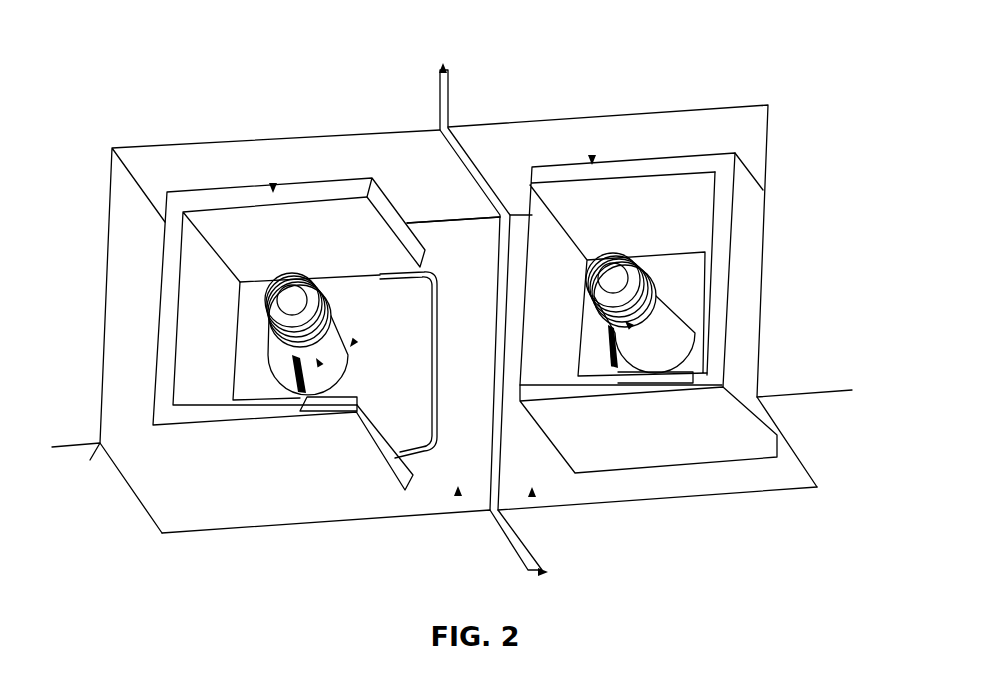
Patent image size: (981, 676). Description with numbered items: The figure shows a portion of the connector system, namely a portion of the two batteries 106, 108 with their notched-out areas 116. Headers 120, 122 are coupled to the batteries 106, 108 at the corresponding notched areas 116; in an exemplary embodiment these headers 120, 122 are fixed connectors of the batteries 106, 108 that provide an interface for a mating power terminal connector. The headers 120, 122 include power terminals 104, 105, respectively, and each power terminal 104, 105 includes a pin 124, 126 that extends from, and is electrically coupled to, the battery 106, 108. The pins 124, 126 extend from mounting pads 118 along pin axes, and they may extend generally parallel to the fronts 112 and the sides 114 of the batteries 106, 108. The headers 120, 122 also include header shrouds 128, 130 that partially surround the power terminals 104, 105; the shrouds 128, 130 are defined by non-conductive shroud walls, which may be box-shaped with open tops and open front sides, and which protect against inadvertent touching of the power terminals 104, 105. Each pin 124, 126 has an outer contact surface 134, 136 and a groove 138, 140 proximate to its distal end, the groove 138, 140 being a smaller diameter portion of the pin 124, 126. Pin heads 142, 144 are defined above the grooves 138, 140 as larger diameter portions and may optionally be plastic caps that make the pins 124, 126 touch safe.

The power terminal 104 is at (362, 362).
The power terminal 105 is at (680, 350).
The battery 106 is at (98, 454).
The battery 108 is at (820, 407).
The front 112 is at (263, 565).
The side 114 is at (434, 130).
The notched-out area 116 is at (458, 490).
The mounting pad 118 is at (207, 515).
The header 120 is at (273, 186).
The header 122 is at (592, 158).
The pin 124 is at (352, 344).
The pin 126 is at (664, 328).
The header shroud 128 is at (165, 300).
The header shroud 130 is at (724, 247).
The outer contact surface 134 is at (358, 348).
The outer contact surface 136 is at (676, 323).
The groove 138 is at (318, 362).
The groove 140 is at (631, 327).
The pin head 142 is at (292, 322).
The pin head 144 is at (612, 338).